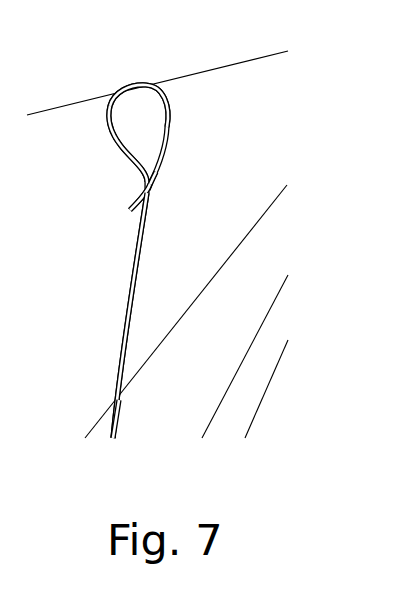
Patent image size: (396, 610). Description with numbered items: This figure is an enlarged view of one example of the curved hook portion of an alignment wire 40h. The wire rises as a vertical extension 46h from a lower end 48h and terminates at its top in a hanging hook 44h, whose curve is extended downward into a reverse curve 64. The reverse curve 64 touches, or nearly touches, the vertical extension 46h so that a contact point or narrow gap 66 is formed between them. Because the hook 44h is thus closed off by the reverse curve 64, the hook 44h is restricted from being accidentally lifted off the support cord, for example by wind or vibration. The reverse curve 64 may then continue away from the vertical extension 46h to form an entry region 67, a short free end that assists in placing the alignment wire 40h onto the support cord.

The elongate tubular member 40h is at (143, 238).
The hanging hook 44h is at (147, 84).
The vertical extension 46h is at (137, 290).
The distal end 48h is at (155, 420).
The reverse curve 64 is at (139, 165).
The contact point or narrow gap 66 is at (151, 188).
The entry region 67 is at (140, 213).